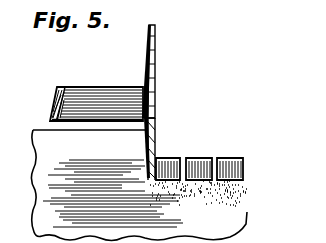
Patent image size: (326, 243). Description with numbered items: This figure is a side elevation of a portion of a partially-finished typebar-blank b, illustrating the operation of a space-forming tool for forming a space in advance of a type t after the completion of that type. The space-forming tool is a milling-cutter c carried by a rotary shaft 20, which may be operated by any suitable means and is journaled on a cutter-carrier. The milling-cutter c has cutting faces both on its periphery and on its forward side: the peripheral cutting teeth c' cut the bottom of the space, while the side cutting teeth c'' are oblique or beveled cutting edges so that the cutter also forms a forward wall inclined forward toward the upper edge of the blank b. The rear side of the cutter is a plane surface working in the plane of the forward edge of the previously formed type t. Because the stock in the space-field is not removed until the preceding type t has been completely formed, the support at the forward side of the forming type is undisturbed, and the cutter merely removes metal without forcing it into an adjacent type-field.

The rotary shaft 20 is at (102, 89).
The peripheral cutting teeth c' is at (164, 71).
The milling-cutter c is at (166, 136).
The side cutting teeth c'' is at (127, 138).
The type t is at (240, 185).
The blank b is at (233, 218).